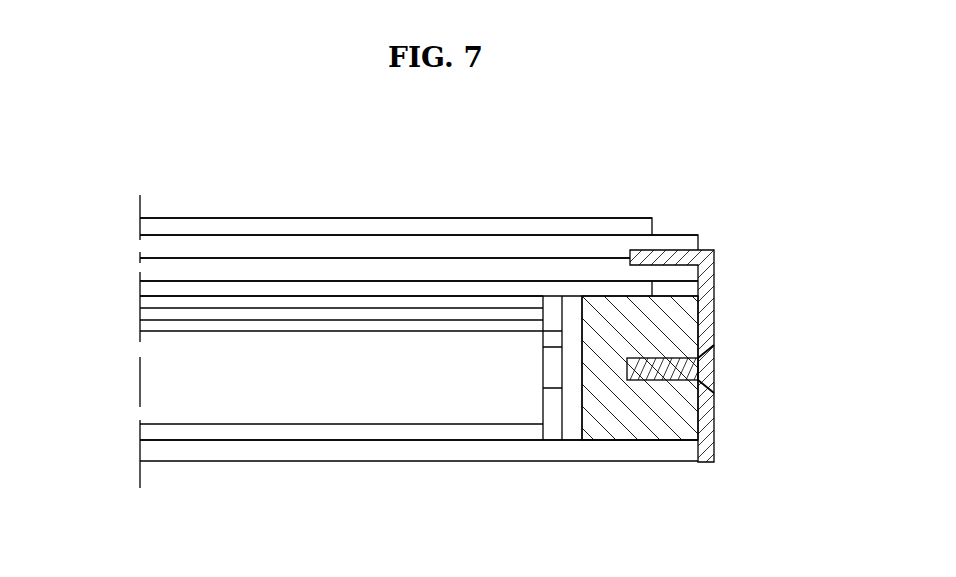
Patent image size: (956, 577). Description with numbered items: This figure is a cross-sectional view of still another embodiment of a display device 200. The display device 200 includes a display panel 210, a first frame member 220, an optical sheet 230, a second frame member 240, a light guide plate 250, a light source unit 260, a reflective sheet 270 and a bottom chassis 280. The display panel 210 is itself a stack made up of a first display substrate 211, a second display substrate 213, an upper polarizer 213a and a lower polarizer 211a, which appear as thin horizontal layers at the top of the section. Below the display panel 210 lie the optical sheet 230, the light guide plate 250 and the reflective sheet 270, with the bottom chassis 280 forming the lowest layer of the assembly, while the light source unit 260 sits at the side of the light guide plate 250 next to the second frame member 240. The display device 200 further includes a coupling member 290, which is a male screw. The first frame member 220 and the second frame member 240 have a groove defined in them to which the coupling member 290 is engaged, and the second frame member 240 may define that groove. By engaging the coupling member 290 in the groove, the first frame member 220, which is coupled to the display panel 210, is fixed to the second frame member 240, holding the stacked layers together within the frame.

The display device 200 is at (170, 185).
The display panel 210 is at (458, 168).
The upper polarizer 213a is at (318, 228).
The second display substrate 213 is at (380, 250).
The first display substrate 211 is at (456, 270).
The lower polarizer 211a is at (522, 290).
The optical sheet 230 is at (138, 292).
The light guide plate 250 is at (176, 383).
The reflective sheet 270 is at (170, 425).
The bottom chassis 280 is at (417, 450).
The light source unit 260 is at (553, 373).
The second frame member 240 is at (652, 408).
The first frame member 220 is at (706, 312).
The coupling member 290 is at (710, 366).